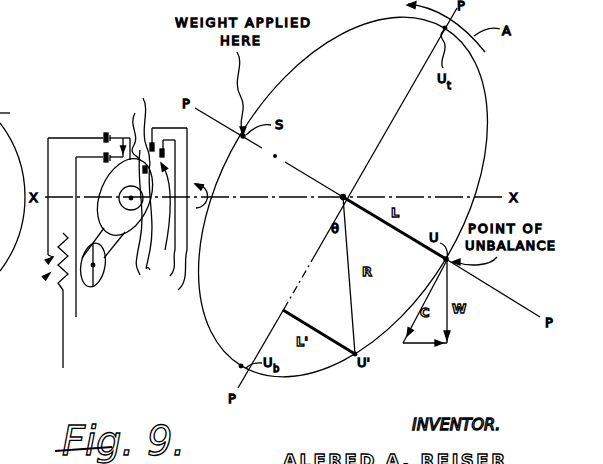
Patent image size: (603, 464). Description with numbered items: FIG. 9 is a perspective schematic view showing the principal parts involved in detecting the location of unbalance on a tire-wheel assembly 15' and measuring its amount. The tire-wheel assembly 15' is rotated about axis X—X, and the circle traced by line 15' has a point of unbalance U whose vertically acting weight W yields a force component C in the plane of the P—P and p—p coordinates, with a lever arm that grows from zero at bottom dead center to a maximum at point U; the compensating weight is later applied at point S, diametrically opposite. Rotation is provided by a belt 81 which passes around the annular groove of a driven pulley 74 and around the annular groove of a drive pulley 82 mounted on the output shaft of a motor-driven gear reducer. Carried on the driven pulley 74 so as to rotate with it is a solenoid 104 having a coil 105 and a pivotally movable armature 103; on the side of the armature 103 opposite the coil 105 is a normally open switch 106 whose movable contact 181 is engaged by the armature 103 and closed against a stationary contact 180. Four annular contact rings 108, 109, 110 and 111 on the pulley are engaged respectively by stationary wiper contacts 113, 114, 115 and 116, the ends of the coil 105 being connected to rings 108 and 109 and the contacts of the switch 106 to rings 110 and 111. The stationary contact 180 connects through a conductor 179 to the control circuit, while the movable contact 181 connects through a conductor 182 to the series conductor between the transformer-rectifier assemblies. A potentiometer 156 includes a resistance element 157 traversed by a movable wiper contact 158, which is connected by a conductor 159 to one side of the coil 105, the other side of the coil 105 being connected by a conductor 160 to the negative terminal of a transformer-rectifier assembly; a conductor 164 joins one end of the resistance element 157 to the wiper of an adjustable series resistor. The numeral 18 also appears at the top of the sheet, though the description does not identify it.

The housing 18 is at (17, 135).
The driven pulley 74 is at (67, 203).
The tire-wheel assembly 15' is at (343, 214).
The conductor 159 is at (47, 156).
The stationary wiper contact 114 is at (104, 135).
The stationary wiper contact 113 is at (103, 156).
The annular contact ring 109 is at (107, 134).
The solenoid 104 is at (124, 136).
The annular contact ring 108 is at (100, 165).
The conductor 160 is at (77, 317).
The armature 103 is at (127, 130).
The coil 105 is at (118, 176).
The drive pulley 82 is at (92, 269).
The belt 81 is at (103, 257).
The stationary wiper contact 115 is at (137, 129).
The annular contact ring 110 is at (151, 142).
The stationary wiper contact 116 is at (188, 133).
The annular contact ring 111 is at (166, 153).
The normally open switch 106 is at (146, 236).
The stationary contact 180 is at (140, 249).
The movable contact 181 is at (146, 218).
The conductor 179 is at (168, 270).
The conductor 182 is at (173, 278).
The movable wiper contact 158 is at (48, 261).
The potentiometer 156 is at (45, 278).
The resistance element 157 is at (55, 288).
The conductor 164 is at (63, 328).